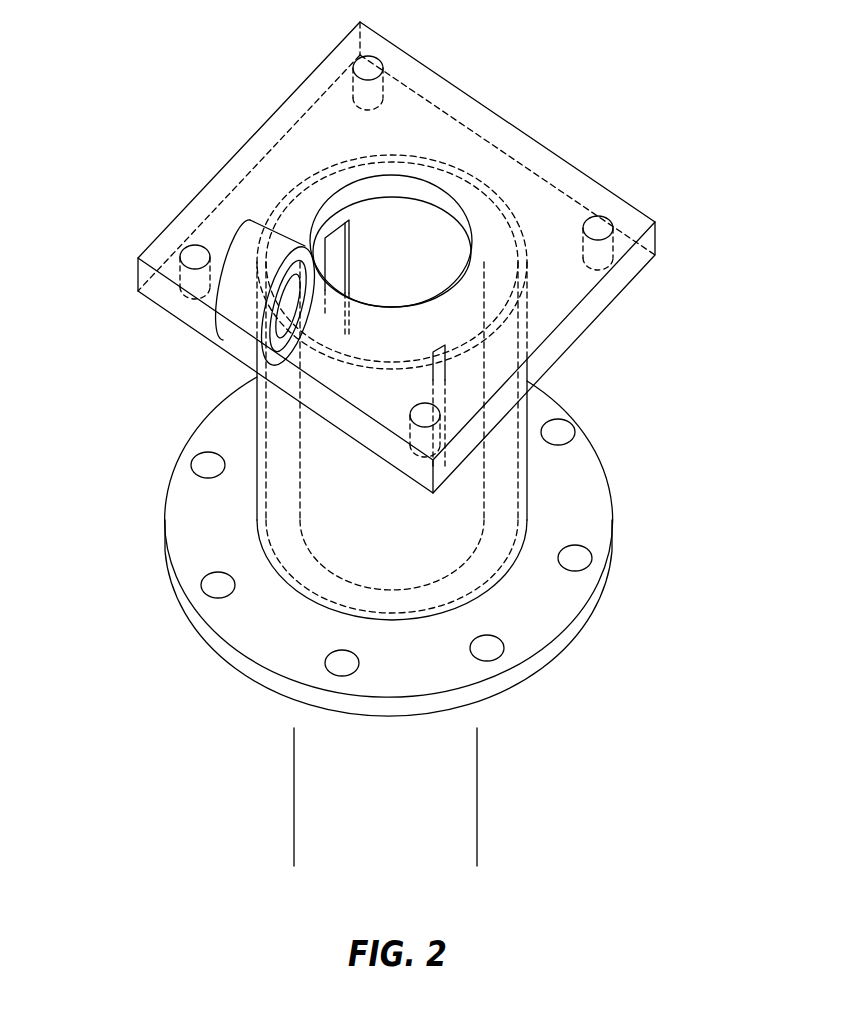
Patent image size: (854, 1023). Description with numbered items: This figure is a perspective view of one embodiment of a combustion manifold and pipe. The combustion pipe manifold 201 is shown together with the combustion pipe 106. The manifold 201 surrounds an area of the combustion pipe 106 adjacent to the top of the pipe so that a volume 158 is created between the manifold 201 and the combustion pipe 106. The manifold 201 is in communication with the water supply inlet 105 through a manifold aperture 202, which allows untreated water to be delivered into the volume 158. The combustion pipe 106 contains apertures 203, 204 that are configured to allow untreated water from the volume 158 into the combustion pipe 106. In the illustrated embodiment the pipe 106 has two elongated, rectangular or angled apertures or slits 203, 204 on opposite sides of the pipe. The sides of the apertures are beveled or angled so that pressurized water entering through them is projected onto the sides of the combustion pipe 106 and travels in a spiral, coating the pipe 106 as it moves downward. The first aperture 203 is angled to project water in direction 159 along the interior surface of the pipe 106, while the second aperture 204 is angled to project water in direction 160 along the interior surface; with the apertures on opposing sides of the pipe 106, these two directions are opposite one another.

The water supply inlet 105 is at (237, 345).
The combustion pipe 106 is at (362, 787).
The volume 158 is at (285, 522).
The direction 159 is at (400, 237).
The direction 160 is at (400, 515).
The combustion pipe manifold 201 is at (257, 400).
The manifold aperture 202 is at (283, 297).
The first aperture 203 is at (336, 247).
The second aperture 204 is at (447, 348).